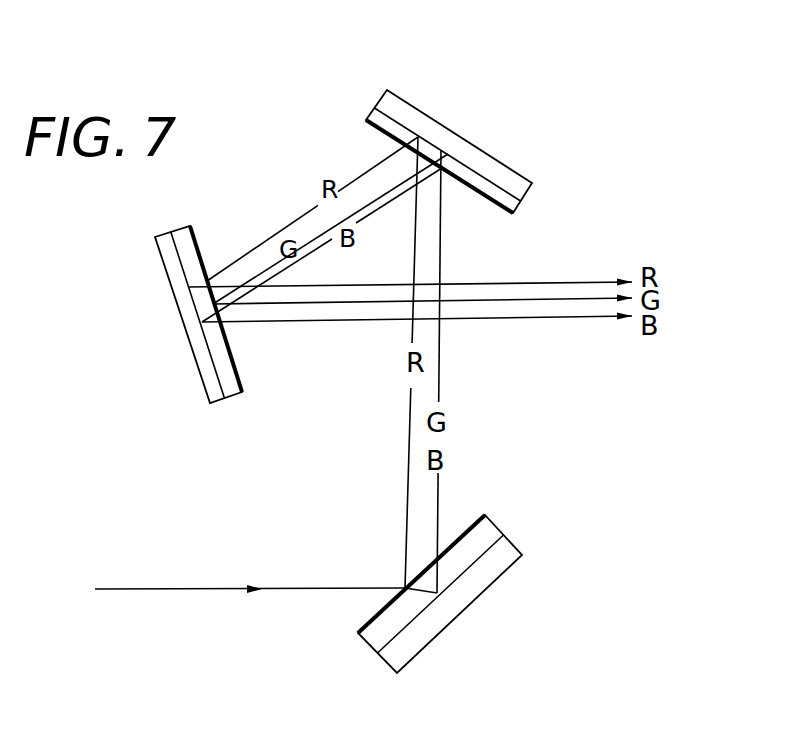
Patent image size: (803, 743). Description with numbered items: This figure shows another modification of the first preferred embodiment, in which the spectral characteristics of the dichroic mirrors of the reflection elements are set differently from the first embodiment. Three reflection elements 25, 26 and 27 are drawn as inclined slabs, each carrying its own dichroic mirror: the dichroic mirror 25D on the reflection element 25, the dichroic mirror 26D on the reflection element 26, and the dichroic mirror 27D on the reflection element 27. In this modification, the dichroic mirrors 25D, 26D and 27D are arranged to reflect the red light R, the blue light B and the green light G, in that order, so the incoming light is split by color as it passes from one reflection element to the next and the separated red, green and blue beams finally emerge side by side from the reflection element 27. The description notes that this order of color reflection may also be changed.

The reflection element 25 is at (475, 587).
The dichroic mirror 25D is at (483, 513).
The reflection element 26 is at (447, 140).
The dichroic mirror 26D is at (498, 210).
The reflection element 27 is at (181, 316).
The dichroic mirror 27D is at (242, 377).